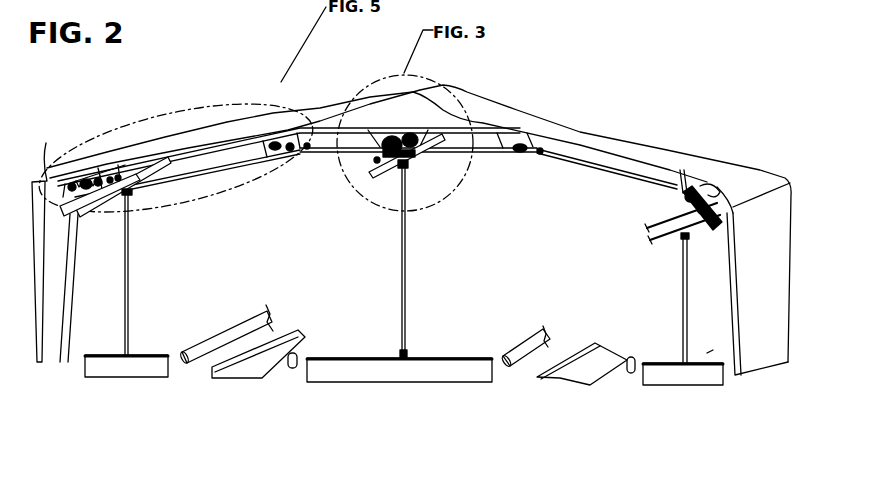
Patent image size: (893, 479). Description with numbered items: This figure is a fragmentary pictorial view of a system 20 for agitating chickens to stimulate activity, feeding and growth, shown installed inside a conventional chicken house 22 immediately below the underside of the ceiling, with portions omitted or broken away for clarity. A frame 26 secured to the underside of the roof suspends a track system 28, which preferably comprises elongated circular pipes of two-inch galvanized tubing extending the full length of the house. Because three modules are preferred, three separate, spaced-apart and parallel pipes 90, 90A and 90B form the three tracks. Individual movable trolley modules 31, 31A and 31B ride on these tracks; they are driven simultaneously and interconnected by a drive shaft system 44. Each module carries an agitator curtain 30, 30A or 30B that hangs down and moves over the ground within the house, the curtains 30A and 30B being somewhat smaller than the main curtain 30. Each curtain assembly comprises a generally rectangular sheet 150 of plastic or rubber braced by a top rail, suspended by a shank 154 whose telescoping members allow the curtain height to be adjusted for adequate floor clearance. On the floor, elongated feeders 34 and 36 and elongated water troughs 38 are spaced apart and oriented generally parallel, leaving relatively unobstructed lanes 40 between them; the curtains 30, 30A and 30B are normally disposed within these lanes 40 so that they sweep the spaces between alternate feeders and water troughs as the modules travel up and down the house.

The system for agitating chickens 20 is at (606, 181).
The chicken house 22 is at (537, 125).
The frame 26 is at (355, 157).
The track system 28 is at (217, 197).
The agitator curtain 30 is at (375, 342).
The agitator curtain 30A is at (143, 363).
The agitator curtain 30B is at (696, 383).
The trolley module 31 is at (436, 173).
The trolley module 31A is at (147, 199).
The trolley module 31B is at (664, 206).
The feeder 34 is at (233, 378).
The feeder 36 is at (574, 384).
The water trough 38 is at (192, 368).
The lane 40 is at (193, 320).
The drive shaft system 44 is at (645, 168).
The pipe 90 is at (408, 178).
The pipe 90A is at (83, 212).
The pipe 90B is at (691, 232).
The sheet of plastic or rubber 150 is at (439, 373).
The shank 154 is at (414, 327).